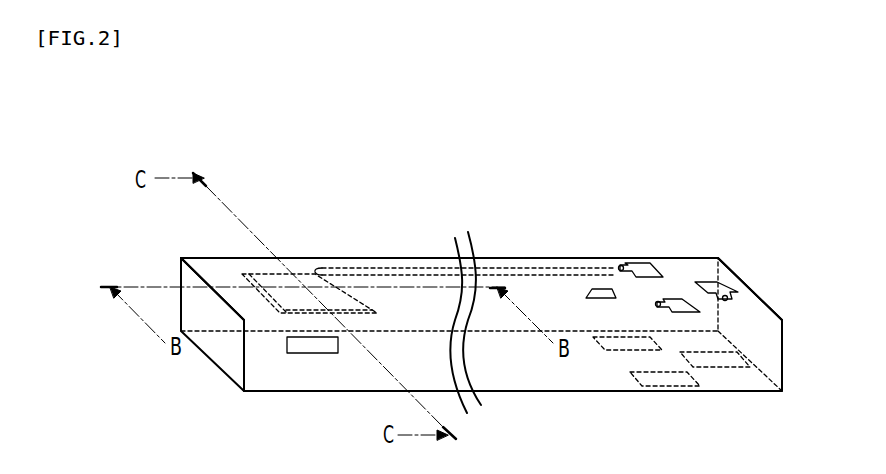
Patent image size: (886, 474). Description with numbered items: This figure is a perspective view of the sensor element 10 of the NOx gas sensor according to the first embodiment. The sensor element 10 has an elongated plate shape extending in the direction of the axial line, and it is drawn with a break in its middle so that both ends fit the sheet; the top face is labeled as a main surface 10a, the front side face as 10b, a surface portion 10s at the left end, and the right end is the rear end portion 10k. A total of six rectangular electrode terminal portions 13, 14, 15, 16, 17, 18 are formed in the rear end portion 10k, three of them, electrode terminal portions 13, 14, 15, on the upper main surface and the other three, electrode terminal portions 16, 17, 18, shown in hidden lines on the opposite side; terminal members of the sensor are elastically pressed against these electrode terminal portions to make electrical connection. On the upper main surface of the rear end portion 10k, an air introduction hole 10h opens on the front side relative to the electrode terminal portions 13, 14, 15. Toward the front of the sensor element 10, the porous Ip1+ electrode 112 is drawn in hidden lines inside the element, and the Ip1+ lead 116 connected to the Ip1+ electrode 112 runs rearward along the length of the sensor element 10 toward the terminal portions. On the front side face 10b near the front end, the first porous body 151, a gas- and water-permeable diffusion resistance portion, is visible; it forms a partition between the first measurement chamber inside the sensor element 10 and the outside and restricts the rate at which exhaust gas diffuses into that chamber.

The sensor element 10 is at (542, 170).
The top surface 10a is at (525, 263).
The front side surface 10b is at (538, 392).
The back top surface portion 10s is at (213, 265).
The rear end portion 10k is at (752, 307).
The air introduction hole 10h is at (598, 288).
The Ip1+ electrode 112 is at (282, 297).
The Ip1+ lead 116 is at (408, 268).
The first porous body 151 is at (308, 348).
The electrode terminal portion 13 is at (642, 272).
The electrode terminal portion 14 is at (708, 285).
The electrode terminal portion 15 is at (678, 305).
The electrode terminal portion 16 is at (627, 342).
The electrode terminal portion 17 is at (725, 358).
The electrode terminal portion 18 is at (672, 377).